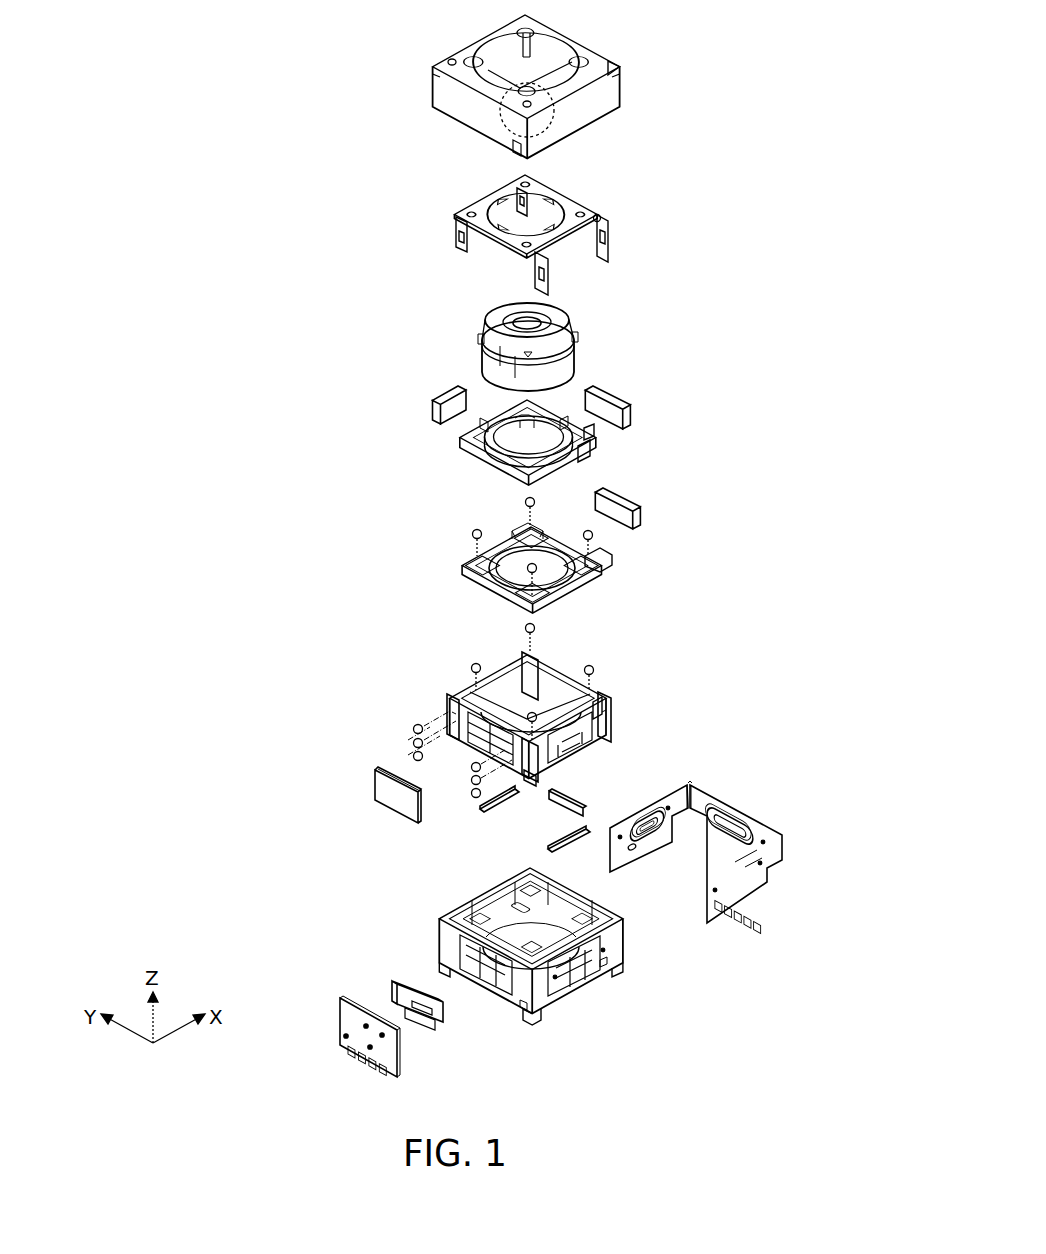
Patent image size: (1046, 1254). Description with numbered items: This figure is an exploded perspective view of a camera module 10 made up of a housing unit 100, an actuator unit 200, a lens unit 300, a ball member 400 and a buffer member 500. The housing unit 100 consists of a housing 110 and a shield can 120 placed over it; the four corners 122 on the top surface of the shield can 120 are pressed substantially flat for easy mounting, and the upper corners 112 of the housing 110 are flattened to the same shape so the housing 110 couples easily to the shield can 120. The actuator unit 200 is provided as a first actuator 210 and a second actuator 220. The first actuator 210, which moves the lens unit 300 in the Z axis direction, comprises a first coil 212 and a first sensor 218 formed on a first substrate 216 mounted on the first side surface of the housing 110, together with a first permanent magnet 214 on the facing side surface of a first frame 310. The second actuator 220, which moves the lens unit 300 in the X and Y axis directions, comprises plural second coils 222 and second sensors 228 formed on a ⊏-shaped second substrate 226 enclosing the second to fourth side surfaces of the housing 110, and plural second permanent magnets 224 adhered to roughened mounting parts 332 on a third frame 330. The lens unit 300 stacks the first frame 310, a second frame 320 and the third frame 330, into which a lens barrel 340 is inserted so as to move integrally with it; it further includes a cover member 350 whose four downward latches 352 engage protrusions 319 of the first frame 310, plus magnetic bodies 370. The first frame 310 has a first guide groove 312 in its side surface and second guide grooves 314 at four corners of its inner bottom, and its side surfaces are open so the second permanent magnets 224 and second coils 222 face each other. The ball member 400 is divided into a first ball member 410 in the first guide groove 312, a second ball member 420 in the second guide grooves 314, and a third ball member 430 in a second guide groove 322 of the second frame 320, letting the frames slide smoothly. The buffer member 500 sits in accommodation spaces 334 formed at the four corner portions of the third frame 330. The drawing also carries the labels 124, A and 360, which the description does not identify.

The camera module 10 is at (747, 309).
The housing unit 100 is at (183, 90).
The housing 110 is at (623, 972).
The upper corners 112 is at (556, 982).
The shield can 120 is at (446, 100).
The corners 122 is at (624, 64).
The cover hole 124 is at (455, 60).
The detail region A is at (554, 114).
The actuator unit 200 is at (243, 222).
The first actuator 210 is at (185, 183).
The first coil 212 is at (425, 1028).
The first permanent magnet 214 is at (380, 790).
The first substrate 216 is at (345, 1018).
The first sensor 218 is at (396, 994).
The second actuator 220 is at (185, 312).
The second coils 222 is at (645, 812).
The second permanent magnets 224 is at (634, 506).
The second substrate 226 is at (625, 858).
The second sensors 228 is at (655, 836).
The lens unit 300 is at (185, 455).
The first frame 310 is at (506, 657).
The first guide groove 312 is at (520, 782).
The second guide grooves 314 is at (594, 670).
The protrusions 319 is at (606, 705).
The second frame 320 is at (605, 580).
The second guide groove 322 is at (604, 558).
The third frame 330 is at (472, 462).
The mounting parts 332 is at (592, 456).
The accommodation space 334 is at (592, 438).
The lens barrel 340 is at (482, 352).
The cover member 350 is at (600, 200).
The latches 352 is at (609, 250).
The yoke 360 is at (362, 722).
The magnetic bodies 370 is at (481, 806).
The ball member 400 is at (185, 672).
The first ball member 410 is at (412, 727).
The second ball member 420 is at (472, 667).
The third ball member 430 is at (472, 530).
The buffer member 500 is at (604, 218).